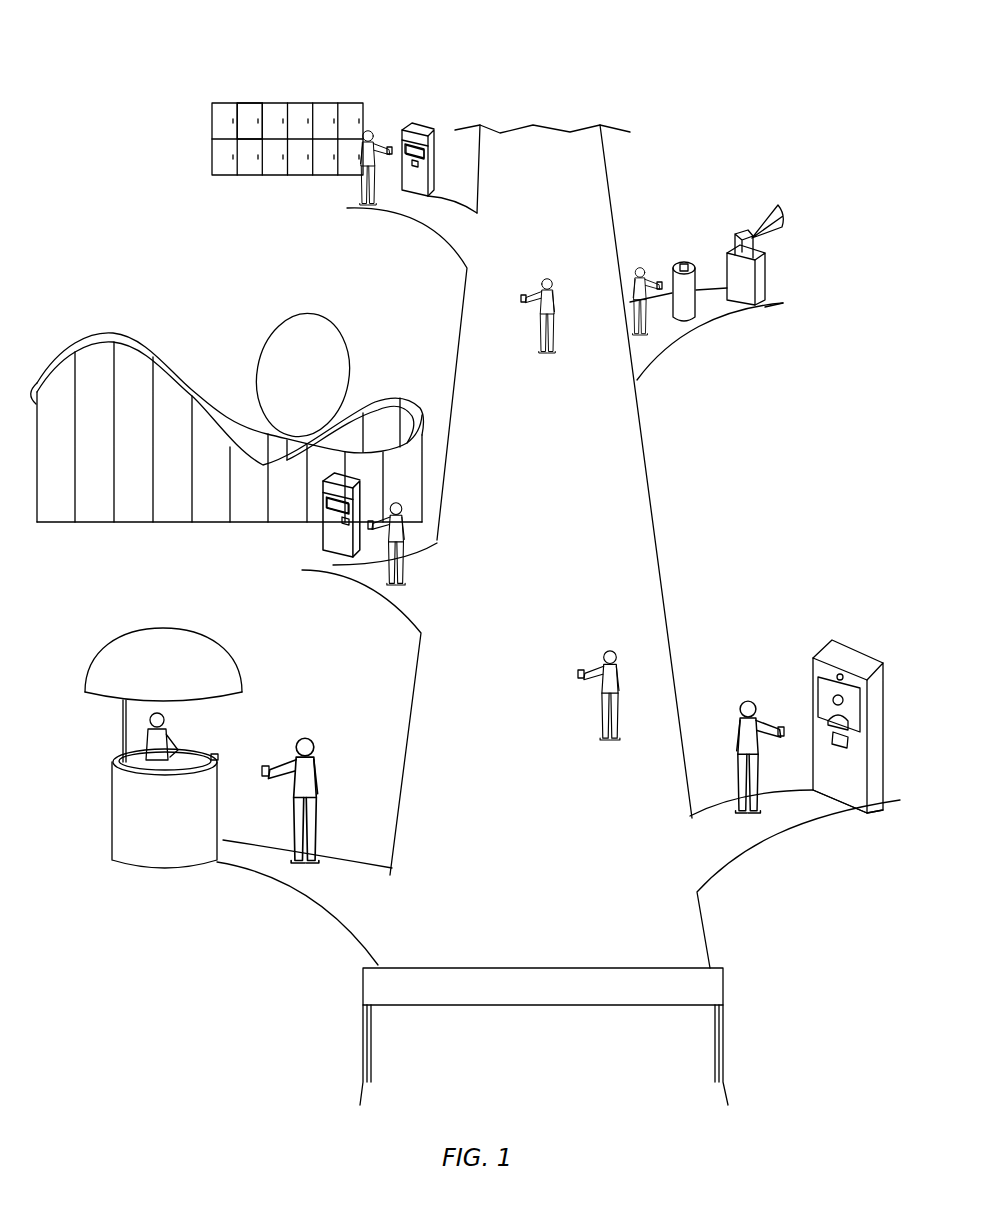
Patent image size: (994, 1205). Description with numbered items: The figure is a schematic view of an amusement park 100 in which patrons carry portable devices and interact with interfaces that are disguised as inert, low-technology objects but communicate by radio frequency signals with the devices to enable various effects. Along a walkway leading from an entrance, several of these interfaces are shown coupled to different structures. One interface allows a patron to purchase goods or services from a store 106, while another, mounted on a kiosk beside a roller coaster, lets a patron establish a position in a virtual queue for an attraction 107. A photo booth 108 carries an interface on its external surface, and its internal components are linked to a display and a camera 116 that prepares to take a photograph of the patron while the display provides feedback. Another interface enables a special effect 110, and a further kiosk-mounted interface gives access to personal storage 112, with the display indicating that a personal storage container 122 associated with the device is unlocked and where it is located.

The amusement park 100 is at (656, 30).
The store 106 is at (203, 612).
The attraction 107 is at (198, 303).
The photo booth 108 is at (866, 790).
The special effect 110 is at (776, 200).
The personal storage 112 is at (306, 89).
The camera 116 is at (838, 673).
The personal storage container 122 is at (248, 104).